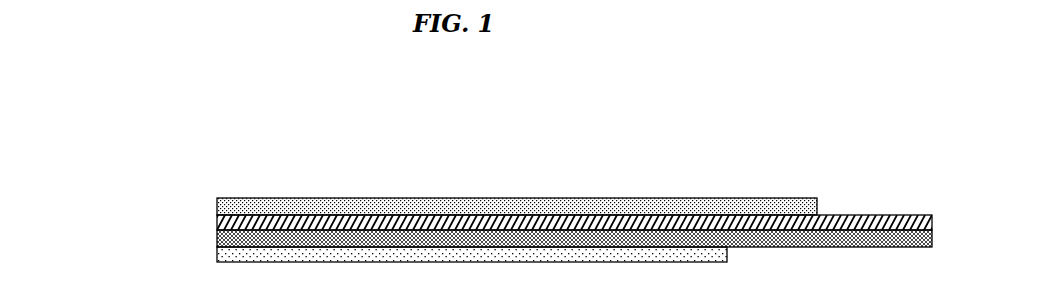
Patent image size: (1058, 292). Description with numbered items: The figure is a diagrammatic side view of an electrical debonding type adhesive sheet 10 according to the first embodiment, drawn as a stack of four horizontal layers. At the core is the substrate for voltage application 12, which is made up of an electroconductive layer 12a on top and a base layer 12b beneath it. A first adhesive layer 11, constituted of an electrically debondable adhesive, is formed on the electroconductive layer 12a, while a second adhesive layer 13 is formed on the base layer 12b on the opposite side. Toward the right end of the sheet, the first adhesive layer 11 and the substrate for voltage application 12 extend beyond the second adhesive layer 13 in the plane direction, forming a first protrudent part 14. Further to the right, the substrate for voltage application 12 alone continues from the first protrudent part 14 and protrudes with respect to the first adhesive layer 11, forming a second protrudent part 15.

The electrical debonding type adhesive sheet 10 is at (283, 155).
The first adhesive layer 11 is at (216, 205).
The substrate for voltage application 12 is at (73, 180).
The electroconductive layer 12a is at (216, 222).
The base layer 12b is at (216, 238).
The second adhesive layer 13 is at (216, 255).
The first protrudent part 14 is at (817, 215).
The second protrudent part 15 is at (932, 215).